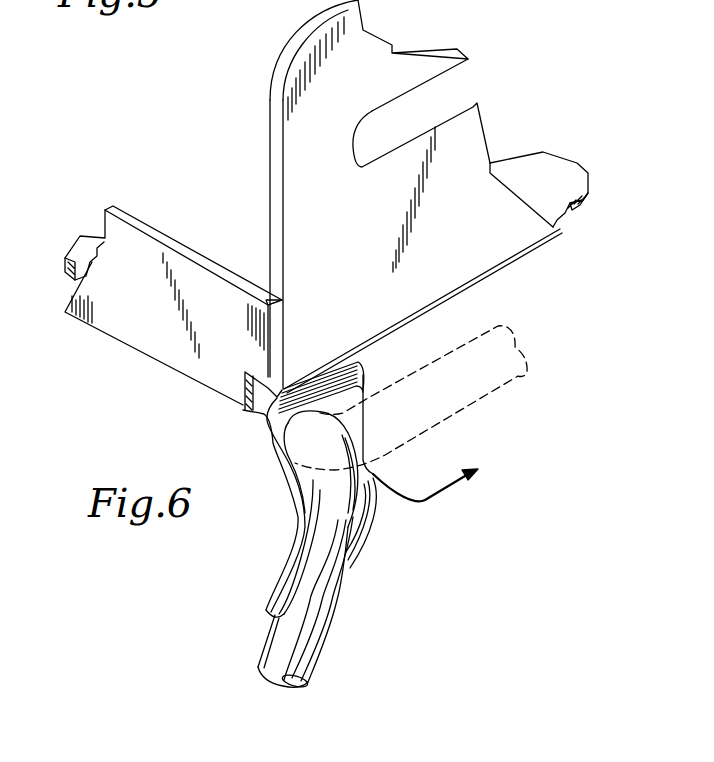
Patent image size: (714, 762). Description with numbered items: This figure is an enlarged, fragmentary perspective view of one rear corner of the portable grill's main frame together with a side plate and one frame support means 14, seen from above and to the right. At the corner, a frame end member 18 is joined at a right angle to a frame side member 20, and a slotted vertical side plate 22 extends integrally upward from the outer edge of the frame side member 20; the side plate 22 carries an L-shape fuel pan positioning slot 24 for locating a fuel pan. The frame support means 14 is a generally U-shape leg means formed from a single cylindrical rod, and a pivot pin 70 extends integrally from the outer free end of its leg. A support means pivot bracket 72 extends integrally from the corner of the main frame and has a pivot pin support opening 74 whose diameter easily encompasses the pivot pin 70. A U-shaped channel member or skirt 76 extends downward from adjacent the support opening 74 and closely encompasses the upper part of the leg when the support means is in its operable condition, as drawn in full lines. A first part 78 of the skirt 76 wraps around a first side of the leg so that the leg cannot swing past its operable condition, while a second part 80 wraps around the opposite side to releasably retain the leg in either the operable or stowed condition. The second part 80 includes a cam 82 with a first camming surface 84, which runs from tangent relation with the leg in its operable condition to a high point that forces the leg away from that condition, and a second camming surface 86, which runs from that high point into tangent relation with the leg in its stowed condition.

The frame support means 14 is at (328, 528).
The frame end member 18 is at (82, 249).
The frame side member 20 is at (545, 170).
The side plate 22 is at (372, 53).
The fuel pan positioning slot 24 is at (458, 108).
The pivot pin 70 is at (250, 424).
The support means pivot bracket 72 is at (338, 368).
The pivot pin support opening 74 is at (348, 395).
The skirt 76 is at (267, 608).
The first part of the skirt 78 is at (289, 528).
The second part of the skirt 80 is at (352, 542).
The cam 82 is at (376, 505).
The first camming surface 84 is at (347, 552).
The second camming surface 86 is at (371, 472).